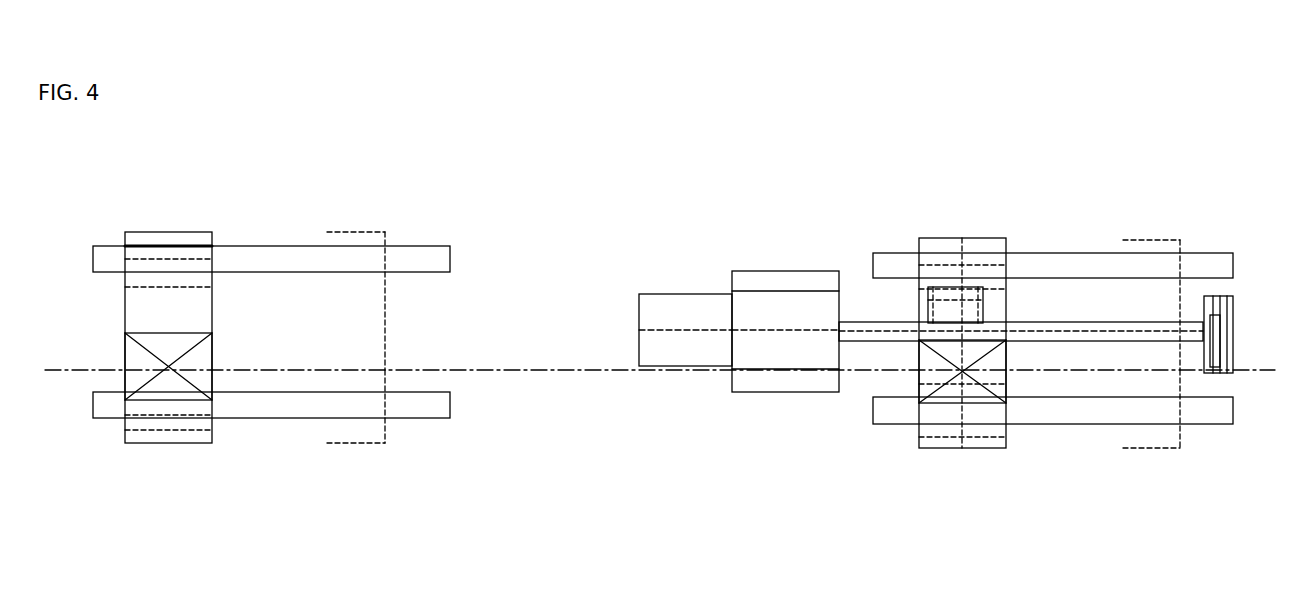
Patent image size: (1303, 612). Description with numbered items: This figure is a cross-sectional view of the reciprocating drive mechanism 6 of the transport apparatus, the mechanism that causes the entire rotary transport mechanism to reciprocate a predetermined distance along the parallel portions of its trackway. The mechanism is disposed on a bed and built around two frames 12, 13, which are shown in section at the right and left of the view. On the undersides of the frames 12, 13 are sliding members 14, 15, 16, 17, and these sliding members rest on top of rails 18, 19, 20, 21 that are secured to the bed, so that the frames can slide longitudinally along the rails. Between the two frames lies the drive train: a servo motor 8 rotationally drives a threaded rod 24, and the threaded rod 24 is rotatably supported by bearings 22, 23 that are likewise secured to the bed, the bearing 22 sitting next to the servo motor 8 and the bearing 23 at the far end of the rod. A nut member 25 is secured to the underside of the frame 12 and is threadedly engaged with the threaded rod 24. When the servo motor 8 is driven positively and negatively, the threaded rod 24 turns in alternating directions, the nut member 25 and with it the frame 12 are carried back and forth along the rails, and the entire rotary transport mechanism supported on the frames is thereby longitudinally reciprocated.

The reciprocating drive mechanism 6 is at (680, 161).
The servo motor 8 is at (687, 300).
The frame 12 is at (978, 237).
The frame 13 is at (145, 231).
The sliding member 14 is at (935, 237).
The sliding member 15 is at (942, 450).
The sliding member 16 is at (184, 230).
The sliding member 17 is at (156, 444).
The rail 18 is at (1053, 262).
The rail 19 is at (1055, 422).
The rail 20 is at (270, 247).
The rail 21 is at (265, 410).
The bearing 22 is at (779, 283).
The bearing 23 is at (1213, 297).
The threaded rod 24 is at (1098, 322).
The nut member 25 is at (1008, 310).